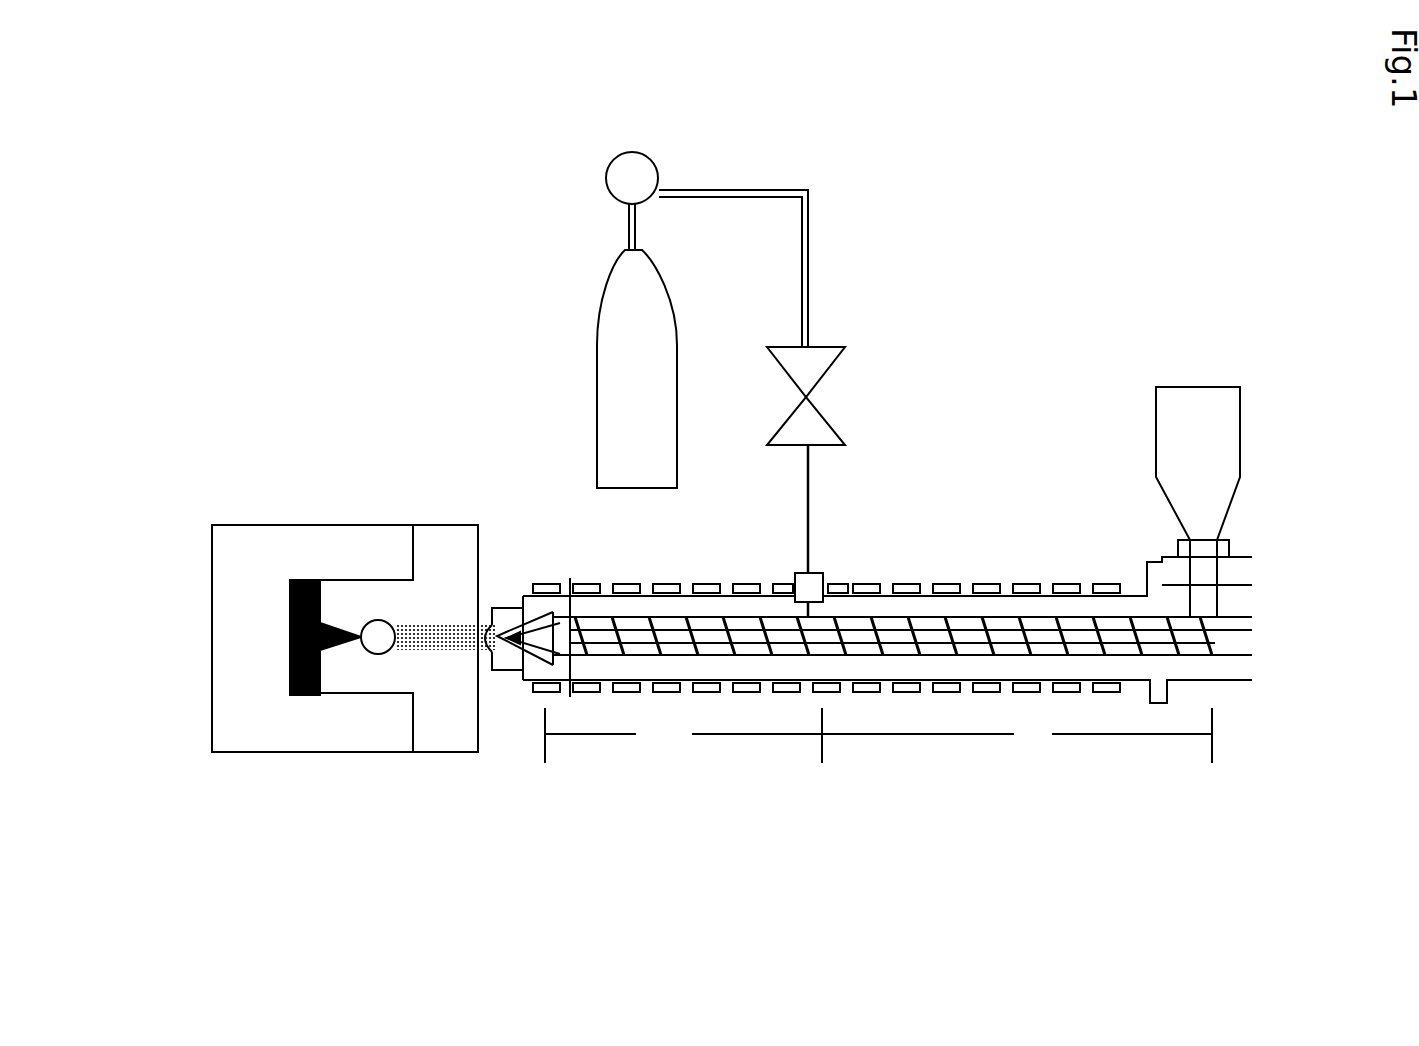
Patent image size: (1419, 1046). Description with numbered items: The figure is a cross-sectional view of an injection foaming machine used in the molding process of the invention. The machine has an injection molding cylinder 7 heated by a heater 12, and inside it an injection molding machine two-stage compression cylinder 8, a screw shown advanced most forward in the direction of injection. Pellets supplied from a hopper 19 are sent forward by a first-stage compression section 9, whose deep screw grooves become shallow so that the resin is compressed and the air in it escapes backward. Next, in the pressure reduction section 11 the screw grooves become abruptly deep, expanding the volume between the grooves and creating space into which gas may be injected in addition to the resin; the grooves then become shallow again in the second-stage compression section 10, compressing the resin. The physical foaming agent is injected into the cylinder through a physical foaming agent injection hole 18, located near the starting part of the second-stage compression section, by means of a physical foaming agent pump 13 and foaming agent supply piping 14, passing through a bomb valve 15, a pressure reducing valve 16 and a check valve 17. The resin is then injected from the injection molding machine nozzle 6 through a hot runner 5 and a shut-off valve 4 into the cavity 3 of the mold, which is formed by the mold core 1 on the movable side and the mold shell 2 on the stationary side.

The mold core 1 is at (247, 668).
The mold shell 2 is at (443, 710).
The cavity 3 is at (290, 623).
The shut-off valve 4 is at (372, 620).
The hot runner 5 is at (457, 623).
The injection molding machine nozzle 6 is at (483, 652).
The injection molding cylinder 7 is at (1142, 605).
The injection molding machine two-stage compression cylinder 8 is at (1213, 657).
The first-stage compression section 9 is at (1017, 738).
The second-stage compression section 10 is at (683, 738).
The pressure reduction section 11 is at (828, 660).
The heater 12 is at (613, 585).
The physical foaming agent pump 13 is at (607, 365).
The foaming agent supply piping 14 is at (807, 232).
The bomb valve 15 is at (616, 176).
The pressure reducing valve 16 is at (813, 377).
The check valve 17 is at (817, 577).
The physical foaming agent injection hole 18 is at (810, 613).
The hopper 19 is at (1225, 418).